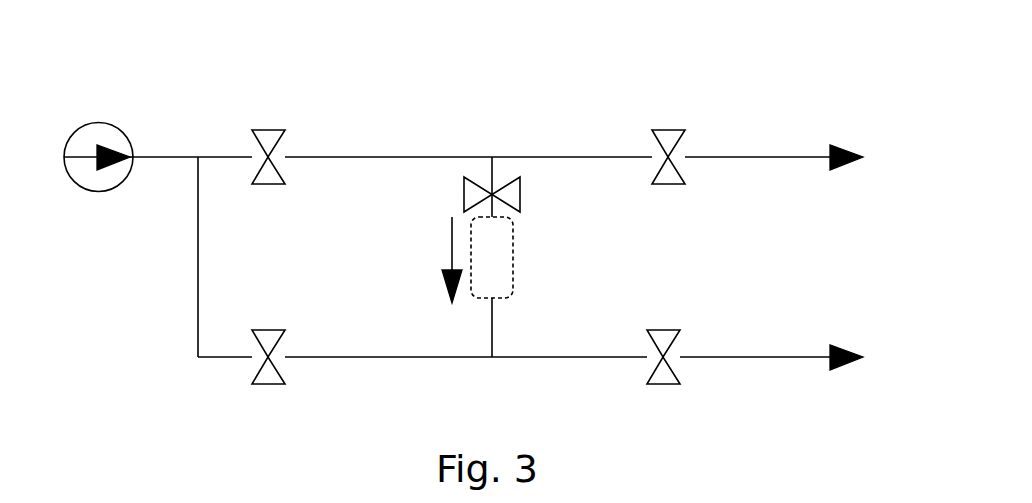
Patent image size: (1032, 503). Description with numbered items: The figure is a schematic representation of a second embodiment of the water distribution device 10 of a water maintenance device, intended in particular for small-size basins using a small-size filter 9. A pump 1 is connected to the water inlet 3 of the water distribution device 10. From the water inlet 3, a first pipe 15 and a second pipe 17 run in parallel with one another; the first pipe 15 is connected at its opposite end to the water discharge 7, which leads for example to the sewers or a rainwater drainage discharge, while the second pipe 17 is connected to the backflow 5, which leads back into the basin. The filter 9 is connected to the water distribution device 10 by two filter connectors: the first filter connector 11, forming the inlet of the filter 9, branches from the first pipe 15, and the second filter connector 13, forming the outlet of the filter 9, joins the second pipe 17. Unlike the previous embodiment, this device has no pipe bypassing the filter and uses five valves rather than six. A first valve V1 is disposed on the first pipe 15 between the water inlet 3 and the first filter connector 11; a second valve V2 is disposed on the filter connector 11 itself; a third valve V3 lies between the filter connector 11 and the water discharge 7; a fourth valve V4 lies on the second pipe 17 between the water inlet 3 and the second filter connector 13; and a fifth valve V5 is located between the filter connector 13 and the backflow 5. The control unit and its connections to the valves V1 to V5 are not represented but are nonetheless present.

The pump 1 is at (72, 130).
The water inlet 3 is at (166, 157).
The backflow 5 is at (793, 363).
The water discharge 7 is at (795, 162).
The filter 9 is at (513, 257).
The water distribution device 10 is at (860, 111).
The first filter connector 11 is at (485, 175).
The second filter connector 13 is at (492, 325).
The first pipe 15 is at (385, 157).
The second pipe 17 is at (342, 357).
The first valve V1 is at (267, 130).
The second valve V2 is at (520, 178).
The third valve V3 is at (668, 130).
The fourth valve V4 is at (267, 330).
The fifth valve V5 is at (666, 330).